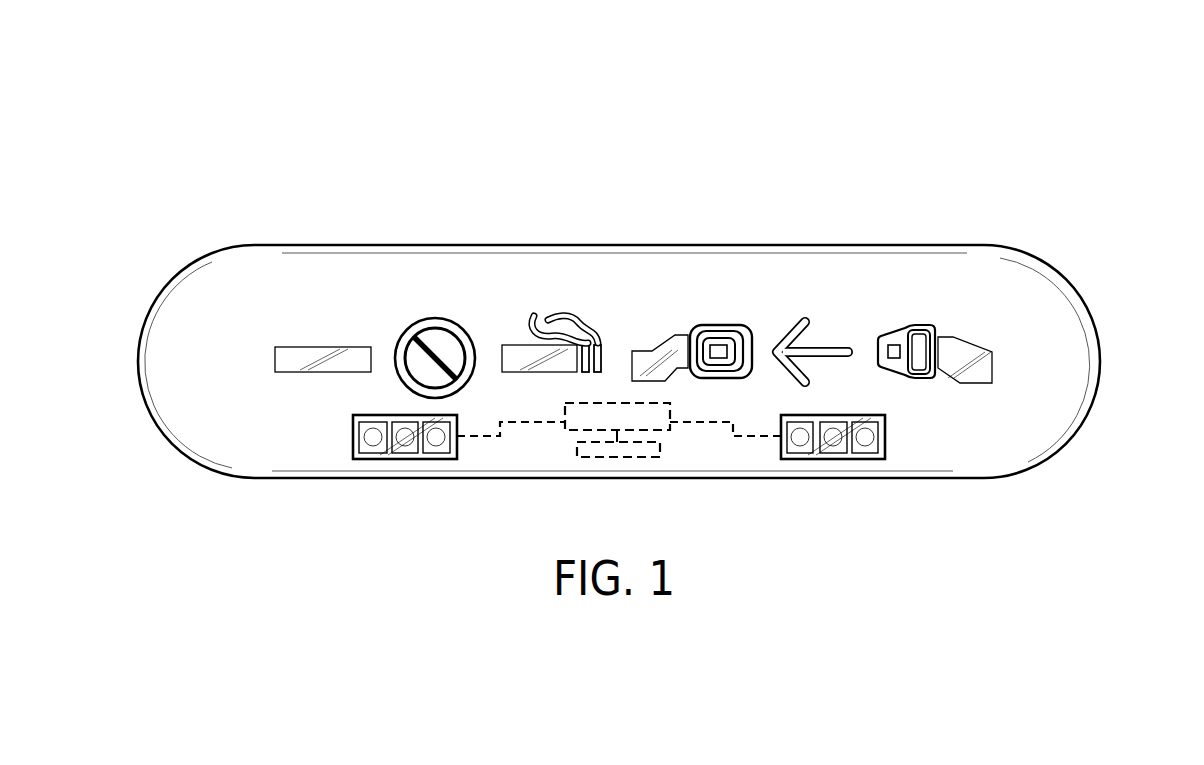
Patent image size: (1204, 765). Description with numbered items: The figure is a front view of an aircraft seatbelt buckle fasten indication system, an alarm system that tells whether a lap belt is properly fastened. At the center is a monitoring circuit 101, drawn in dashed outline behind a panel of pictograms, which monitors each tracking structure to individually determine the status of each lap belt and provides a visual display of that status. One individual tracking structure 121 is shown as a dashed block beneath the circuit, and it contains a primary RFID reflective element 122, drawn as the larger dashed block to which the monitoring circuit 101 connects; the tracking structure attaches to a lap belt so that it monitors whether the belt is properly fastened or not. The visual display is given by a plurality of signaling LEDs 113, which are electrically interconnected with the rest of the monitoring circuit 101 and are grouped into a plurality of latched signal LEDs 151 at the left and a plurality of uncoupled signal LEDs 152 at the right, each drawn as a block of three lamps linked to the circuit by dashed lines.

The monitoring circuit 101 is at (667, 435).
The plurality of signaling LEDs 113 is at (775, 293).
The individual tracking structure 121 is at (622, 457).
The primary RFID reflective element 122 is at (612, 410).
The plurality of latched signal LEDs 151 is at (423, 459).
The plurality of uncoupled signal LEDs 152 is at (832, 459).